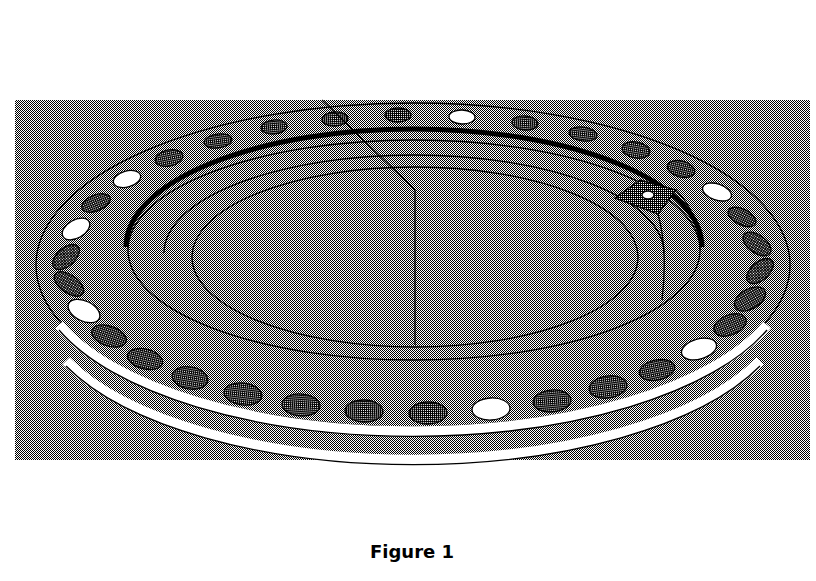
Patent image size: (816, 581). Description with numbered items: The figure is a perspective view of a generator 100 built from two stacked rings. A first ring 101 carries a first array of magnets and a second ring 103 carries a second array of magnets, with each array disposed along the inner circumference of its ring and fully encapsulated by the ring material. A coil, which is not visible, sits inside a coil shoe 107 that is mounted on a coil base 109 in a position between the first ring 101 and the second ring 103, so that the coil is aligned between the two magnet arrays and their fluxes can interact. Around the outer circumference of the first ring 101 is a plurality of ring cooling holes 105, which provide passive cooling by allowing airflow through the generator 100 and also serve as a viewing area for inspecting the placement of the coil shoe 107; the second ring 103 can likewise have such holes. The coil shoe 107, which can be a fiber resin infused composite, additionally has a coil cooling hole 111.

The generator 100 is at (412, 276).
The first ring 101 is at (413, 291).
The second ring 103 is at (570, 438).
The ring cooling holes 105 is at (706, 440).
The coil shoe 107 is at (628, 173).
The coil base 109 is at (606, 300).
The coil cooling hole 111 is at (705, 123).